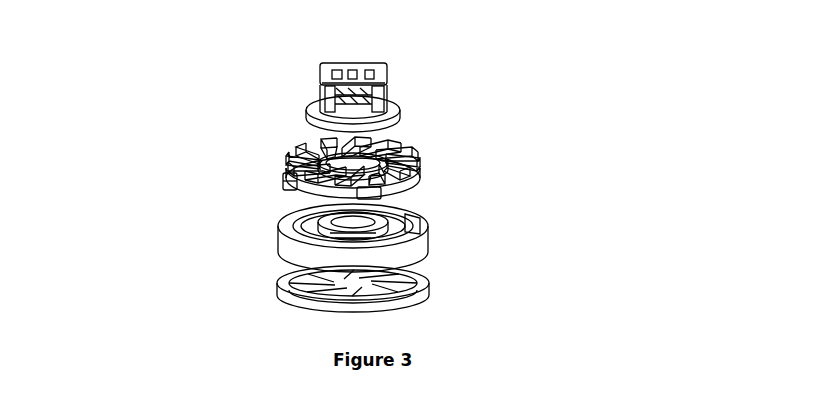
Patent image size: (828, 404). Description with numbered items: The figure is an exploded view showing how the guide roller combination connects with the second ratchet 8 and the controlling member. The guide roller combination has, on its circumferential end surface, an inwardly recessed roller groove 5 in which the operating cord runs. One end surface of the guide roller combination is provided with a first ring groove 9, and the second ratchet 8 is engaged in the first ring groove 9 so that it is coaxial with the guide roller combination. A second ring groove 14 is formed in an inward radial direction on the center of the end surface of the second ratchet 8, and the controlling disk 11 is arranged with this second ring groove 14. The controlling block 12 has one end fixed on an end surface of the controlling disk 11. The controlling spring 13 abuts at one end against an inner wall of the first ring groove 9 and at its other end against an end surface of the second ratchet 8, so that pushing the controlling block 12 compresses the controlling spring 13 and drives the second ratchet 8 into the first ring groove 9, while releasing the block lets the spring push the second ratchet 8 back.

The roller groove 5 is at (278, 280).
The second ratchet 8 is at (283, 172).
The first ring groove 9 is at (283, 218).
The controlling disk 11 is at (310, 118).
The controlling block 12 is at (388, 70).
The controlling spring 13 is at (418, 210).
The second ring groove 14 is at (418, 148).